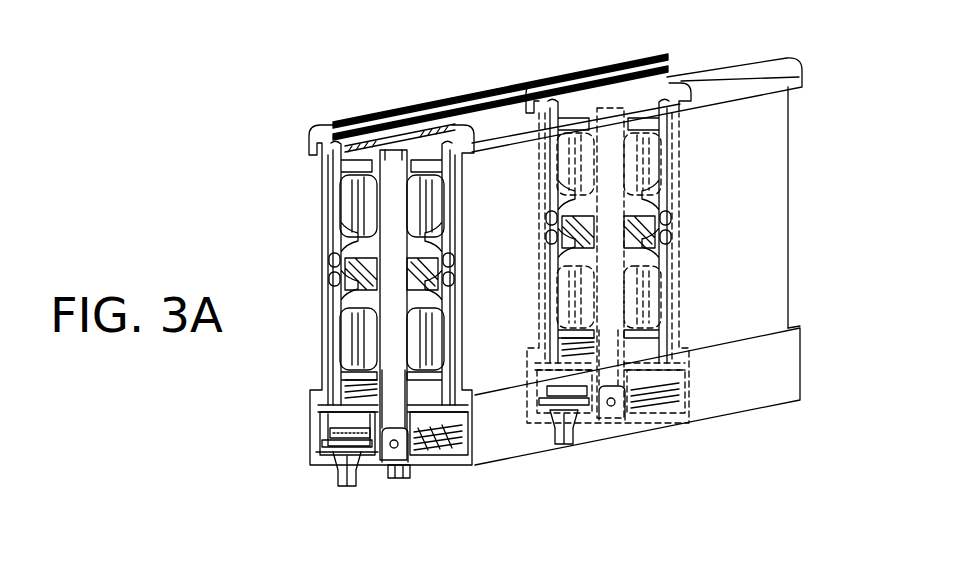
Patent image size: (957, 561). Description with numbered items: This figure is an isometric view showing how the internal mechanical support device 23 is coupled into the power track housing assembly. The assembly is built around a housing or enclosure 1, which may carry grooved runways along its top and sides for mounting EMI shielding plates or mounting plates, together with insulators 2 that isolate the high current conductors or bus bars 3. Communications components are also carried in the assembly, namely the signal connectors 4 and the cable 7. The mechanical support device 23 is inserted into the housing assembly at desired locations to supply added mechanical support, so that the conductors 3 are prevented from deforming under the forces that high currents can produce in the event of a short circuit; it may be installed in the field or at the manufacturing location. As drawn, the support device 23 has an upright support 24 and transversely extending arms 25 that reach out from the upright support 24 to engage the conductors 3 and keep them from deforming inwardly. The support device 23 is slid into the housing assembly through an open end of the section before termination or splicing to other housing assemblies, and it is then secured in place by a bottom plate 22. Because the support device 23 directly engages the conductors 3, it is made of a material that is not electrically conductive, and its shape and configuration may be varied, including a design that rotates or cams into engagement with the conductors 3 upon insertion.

The housing or enclosure 1 is at (738, 295).
The insulators 2 is at (337, 283).
The high current conductors or bus bars 3 is at (352, 205).
The signal connectors 4 is at (337, 477).
The cable 7 is at (330, 423).
The bottom plate 22 is at (387, 453).
The internal mechanical support device 23 is at (395, 382).
The upright support 24 is at (392, 212).
The transversely extending arms 25 is at (416, 176).